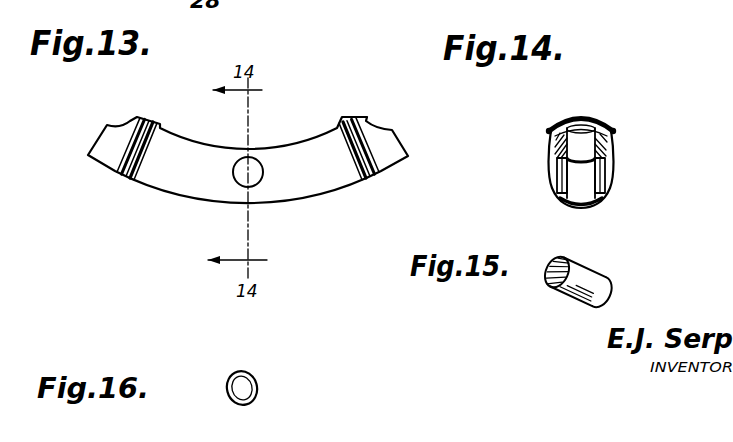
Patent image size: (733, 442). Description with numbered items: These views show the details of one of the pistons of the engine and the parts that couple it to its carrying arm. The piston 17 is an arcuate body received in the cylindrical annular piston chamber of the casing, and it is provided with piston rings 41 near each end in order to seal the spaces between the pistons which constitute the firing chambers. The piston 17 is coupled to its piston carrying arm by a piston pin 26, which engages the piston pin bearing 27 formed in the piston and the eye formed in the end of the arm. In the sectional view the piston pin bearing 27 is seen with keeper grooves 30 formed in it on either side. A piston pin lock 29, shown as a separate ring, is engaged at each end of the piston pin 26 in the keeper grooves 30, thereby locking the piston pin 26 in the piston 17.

In FIG. 13, the piston 17 is at (343, 184).
In FIG. 14, the piston 17 is at (556, 150).
In FIG. 15, the piston pin 26 is at (578, 300).
In FIG. 13, the piston pin bearing 27 is at (264, 172).
In FIG. 14, the piston pin bearing 27 is at (594, 202).
In FIG. 16, the piston pin lock 29 is at (257, 393).
In FIG. 14, the keeper groove 30 is at (557, 176).
In FIG. 13, the piston ring 41 is at (141, 158).
In FIG. 14, the piston ring 41 is at (612, 142).